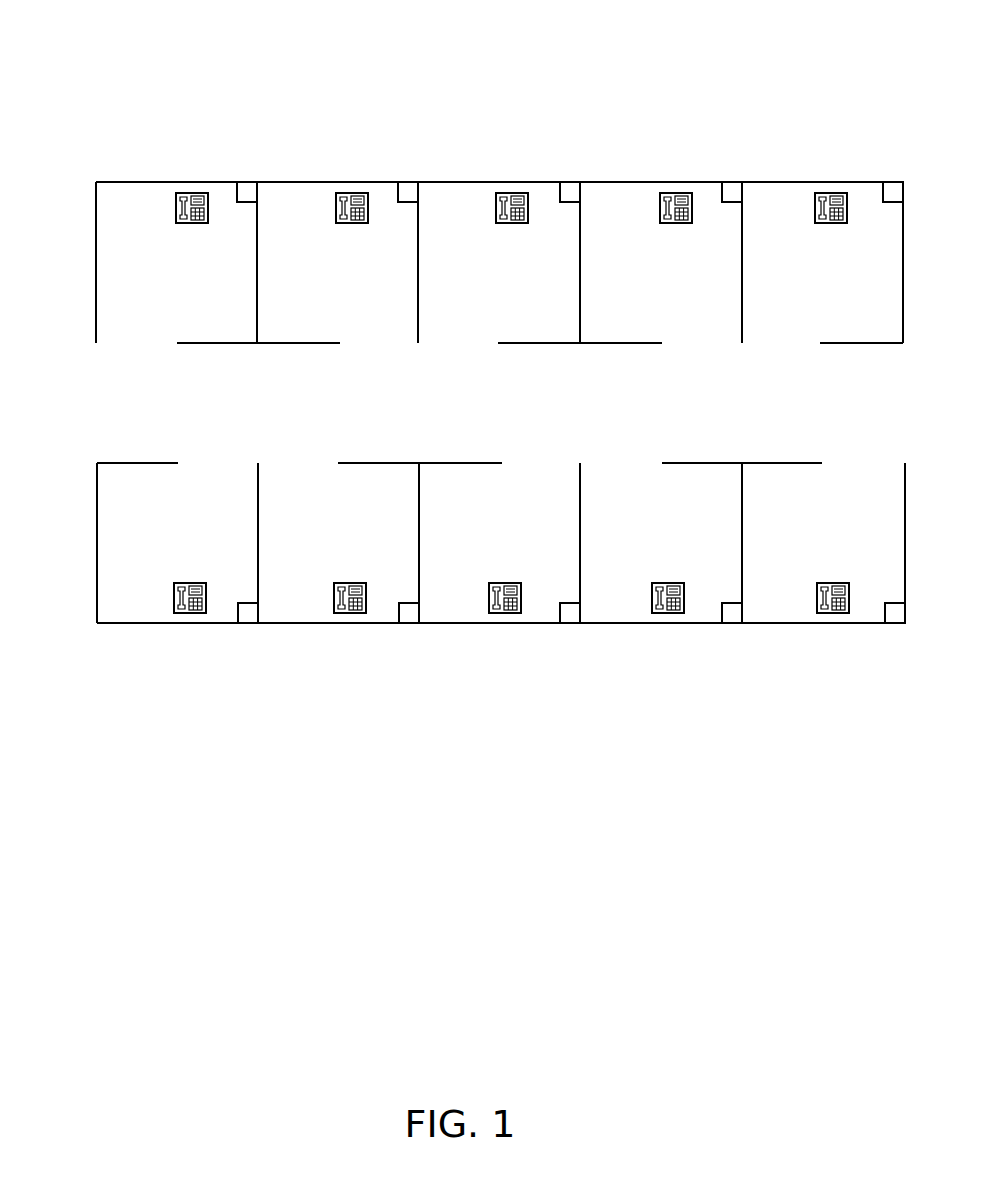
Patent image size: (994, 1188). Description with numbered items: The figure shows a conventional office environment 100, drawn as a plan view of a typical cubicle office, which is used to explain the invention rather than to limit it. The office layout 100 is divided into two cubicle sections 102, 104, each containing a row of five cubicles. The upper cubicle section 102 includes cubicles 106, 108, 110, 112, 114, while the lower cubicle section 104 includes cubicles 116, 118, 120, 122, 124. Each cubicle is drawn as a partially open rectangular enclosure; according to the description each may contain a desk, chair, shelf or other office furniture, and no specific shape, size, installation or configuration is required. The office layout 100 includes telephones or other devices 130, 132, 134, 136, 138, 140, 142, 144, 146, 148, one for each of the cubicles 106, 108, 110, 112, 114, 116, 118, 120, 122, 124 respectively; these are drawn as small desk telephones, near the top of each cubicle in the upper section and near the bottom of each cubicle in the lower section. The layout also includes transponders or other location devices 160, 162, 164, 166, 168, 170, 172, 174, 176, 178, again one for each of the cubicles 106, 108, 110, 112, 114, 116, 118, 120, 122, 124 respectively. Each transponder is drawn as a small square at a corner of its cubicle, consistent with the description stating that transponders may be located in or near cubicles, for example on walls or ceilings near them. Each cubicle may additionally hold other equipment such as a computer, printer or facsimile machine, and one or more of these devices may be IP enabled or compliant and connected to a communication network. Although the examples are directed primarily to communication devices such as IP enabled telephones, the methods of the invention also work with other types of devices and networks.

The office environment 100 is at (488, 56).
The cubicle section 102 is at (93, 239).
The cubicle section 104 is at (95, 538).
The cubicle 106 is at (165, 297).
The cubicle 108 is at (326, 297).
The cubicle 110 is at (479, 297).
The cubicle 112 is at (640, 297).
The cubicle 114 is at (800, 297).
The cubicle 116 is at (165, 534).
The cubicle 118 is at (326, 534).
The cubicle 120 is at (479, 534).
The cubicle 122 is at (641, 534).
The cubicle 124 is at (798, 534).
The telephone 130 is at (188, 193).
The telephone 132 is at (346, 193).
The telephone 134 is at (508, 193).
The telephone 136 is at (672, 193).
The telephone 138 is at (827, 193).
The telephone 140 is at (183, 614).
The telephone 142 is at (343, 614).
The telephone 144 is at (499, 614).
The telephone 146 is at (662, 614).
The telephone 148 is at (826, 614).
The transponder 160 is at (237, 192).
The transponder 162 is at (398, 192).
The transponder 164 is at (560, 192).
The transponder 166 is at (722, 192).
The transponder 168 is at (883, 192).
The transponder 170 is at (238, 612).
The transponder 172 is at (399, 612).
The transponder 174 is at (560, 612).
The transponder 176 is at (722, 612).
The transponder 178 is at (885, 612).